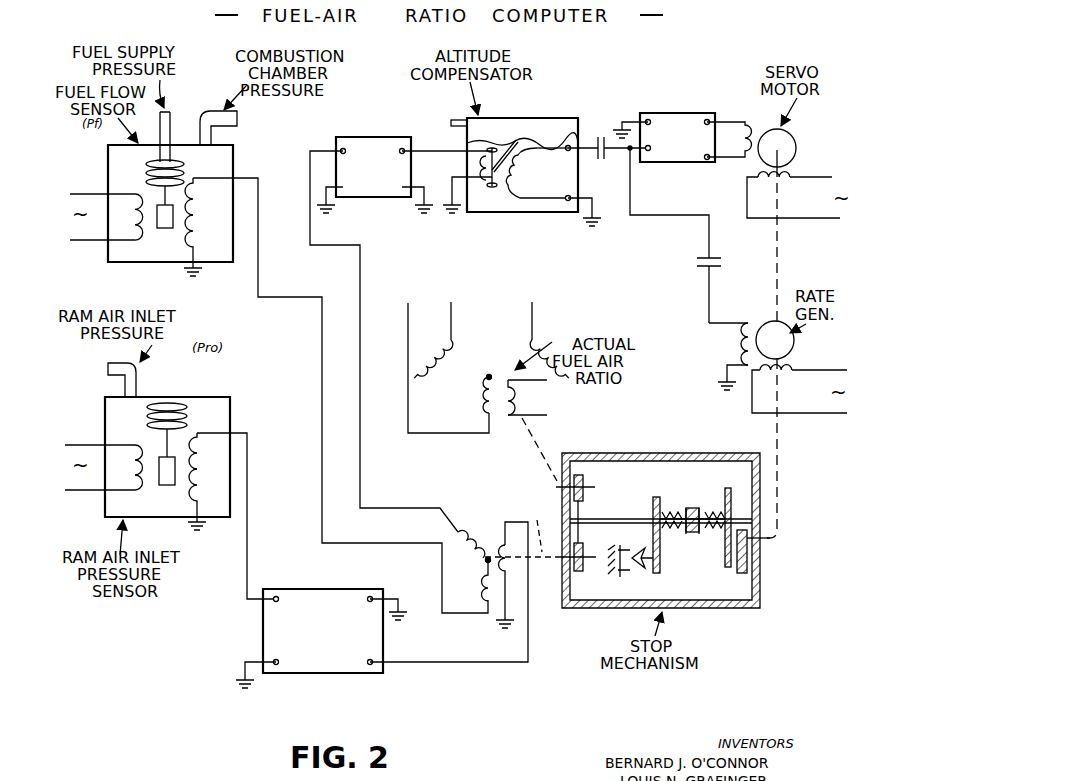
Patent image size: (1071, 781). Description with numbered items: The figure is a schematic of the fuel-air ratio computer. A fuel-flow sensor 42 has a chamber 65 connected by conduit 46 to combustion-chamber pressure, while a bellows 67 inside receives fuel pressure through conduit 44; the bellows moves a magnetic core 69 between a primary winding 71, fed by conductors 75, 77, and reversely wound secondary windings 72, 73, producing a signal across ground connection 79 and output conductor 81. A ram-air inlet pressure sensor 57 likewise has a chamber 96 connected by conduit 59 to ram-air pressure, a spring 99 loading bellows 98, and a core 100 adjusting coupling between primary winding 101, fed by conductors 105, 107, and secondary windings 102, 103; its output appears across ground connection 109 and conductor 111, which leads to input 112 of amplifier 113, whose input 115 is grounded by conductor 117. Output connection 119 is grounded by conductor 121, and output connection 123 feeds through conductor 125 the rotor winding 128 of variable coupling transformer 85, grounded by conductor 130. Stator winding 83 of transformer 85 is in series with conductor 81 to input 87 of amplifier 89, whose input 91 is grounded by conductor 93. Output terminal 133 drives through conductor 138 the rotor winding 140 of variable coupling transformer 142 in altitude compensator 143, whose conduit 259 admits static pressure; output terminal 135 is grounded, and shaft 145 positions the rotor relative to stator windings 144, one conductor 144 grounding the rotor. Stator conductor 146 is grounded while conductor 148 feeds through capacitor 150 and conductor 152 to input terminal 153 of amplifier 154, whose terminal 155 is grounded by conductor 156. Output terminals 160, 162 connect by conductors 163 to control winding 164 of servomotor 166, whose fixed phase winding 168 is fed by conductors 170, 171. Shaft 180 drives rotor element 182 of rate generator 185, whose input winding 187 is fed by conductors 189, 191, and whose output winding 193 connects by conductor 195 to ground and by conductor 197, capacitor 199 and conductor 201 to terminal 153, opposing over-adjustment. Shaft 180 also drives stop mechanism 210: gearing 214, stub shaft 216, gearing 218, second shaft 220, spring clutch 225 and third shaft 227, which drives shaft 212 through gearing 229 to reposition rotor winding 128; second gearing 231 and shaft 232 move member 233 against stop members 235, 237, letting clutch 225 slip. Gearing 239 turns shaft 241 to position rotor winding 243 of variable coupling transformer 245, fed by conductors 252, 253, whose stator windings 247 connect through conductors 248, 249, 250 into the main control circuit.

The fuel-flow sensor 42 is at (240, 162).
The conduit 44 is at (172, 122).
The conduit 46 is at (222, 128).
The ram-air inlet pressure sensor 57 is at (235, 405).
The conduit 59 is at (110, 380).
The chamber 65 is at (165, 262).
The bellows 67 is at (181, 168).
The magnetic core 69 is at (160, 228).
The primary winding 71 is at (130, 196).
The secondary winding 72 is at (197, 198).
The secondary winding 73 is at (198, 242).
The conductor 75 is at (80, 192).
The conductor 77 is at (86, 242).
The common ground connection 79 is at (188, 270).
The output conductor 81 is at (278, 297).
The stator winding 83 is at (484, 565).
The variable coupling transformer 85 is at (482, 540).
The input 87 is at (346, 149).
The amplifier 89 is at (384, 188).
The input 91 is at (345, 190).
The conductor 93 is at (330, 218).
The chamber 96 is at (165, 517).
The bellows 98 is at (188, 416).
The spring 99 is at (172, 405).
The magnetic core 100 is at (163, 485).
The primary winding 101 is at (130, 447).
The secondary winding 102 is at (205, 455).
The secondary winding 103 is at (207, 497).
The conductor 105 is at (84, 443).
The conductor 107 is at (86, 492).
The common ground connection 109 is at (212, 525).
The output conductor 111 is at (247, 549).
The input 112 is at (280, 598).
The amplifier 113 is at (341, 660).
The input 115 is at (276, 666).
The conductor 117 is at (243, 663).
The output connection 119 is at (372, 597).
The conductor 121 is at (404, 602).
The output connection 123 is at (369, 666).
The conductor 125 is at (413, 666).
The rotor winding 128 is at (513, 568).
The conductor 130 is at (502, 604).
The output terminal 133 is at (401, 148).
The output terminal 135 is at (403, 190).
The conductor 138 is at (467, 155).
The rotor winding 140 is at (490, 185).
The variable coupling transformer 142 is at (501, 208).
The altitude compensator 143 is at (533, 122).
The stator windings 144 is at (452, 205).
The shaft 145 is at (496, 160).
The conductor 146 is at (565, 205).
The conductor 148 is at (550, 150).
The capacitor 150 is at (601, 160).
The conductor 152 is at (632, 150).
The input terminal 153 is at (650, 152).
The amplifier 154 is at (690, 156).
The input terminal 155 is at (650, 120).
The conductor 156 is at (622, 122).
The output terminal 160 is at (709, 120).
The output terminal 162 is at (708, 160).
The conductors 163 is at (740, 150).
The control winding 164 is at (750, 130).
The servomotor 166 is at (797, 140).
The fixed phase winding 168 is at (787, 180).
The conductor 170 is at (800, 176).
The conductor 171 is at (803, 218).
The shaft 180 is at (780, 265).
The rotor element 182 is at (796, 346).
The rate generator 185 is at (755, 323).
The input winding 187 is at (782, 373).
The conductor 189 is at (805, 370).
The conductor 191 is at (805, 413).
The output winding 193 is at (742, 338).
The conductor 195 is at (728, 372).
The conductor 197 is at (707, 296).
The capacitor 199 is at (723, 262).
The conductor 201 is at (660, 215).
The stop mechanism 210 is at (620, 455).
The shaft 212 is at (559, 519).
The gearing 214 is at (752, 552).
The stub shaft 216 is at (740, 568).
The gearing 218 is at (725, 552).
The second shaft 220 is at (729, 500).
The spring clutch 225 is at (690, 505).
The third shaft 227 is at (630, 515).
The gearing 229 is at (583, 548).
The second gearing 231 is at (661, 550).
The shaft 232 is at (645, 565).
The member 233 is at (643, 575).
The stop member 235 is at (626, 554).
The stop member 237 is at (622, 578).
The gearing 239 is at (584, 500).
The shaft 241 is at (538, 456).
The rotor winding 243 is at (516, 400).
The variable coupling transformer 245 is at (532, 349).
The stator windings 247 is at (512, 350).
The conductor 248 is at (408, 380).
The conductor 249 is at (453, 333).
The conductor 250 is at (534, 316).
The conductor 252 is at (545, 383).
The conductor 253 is at (540, 416).
The conduit 259 is at (452, 120).